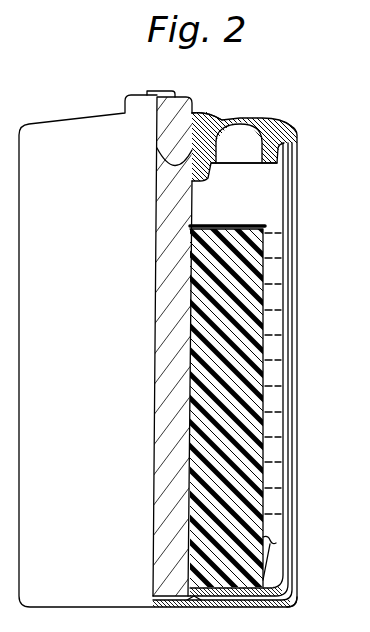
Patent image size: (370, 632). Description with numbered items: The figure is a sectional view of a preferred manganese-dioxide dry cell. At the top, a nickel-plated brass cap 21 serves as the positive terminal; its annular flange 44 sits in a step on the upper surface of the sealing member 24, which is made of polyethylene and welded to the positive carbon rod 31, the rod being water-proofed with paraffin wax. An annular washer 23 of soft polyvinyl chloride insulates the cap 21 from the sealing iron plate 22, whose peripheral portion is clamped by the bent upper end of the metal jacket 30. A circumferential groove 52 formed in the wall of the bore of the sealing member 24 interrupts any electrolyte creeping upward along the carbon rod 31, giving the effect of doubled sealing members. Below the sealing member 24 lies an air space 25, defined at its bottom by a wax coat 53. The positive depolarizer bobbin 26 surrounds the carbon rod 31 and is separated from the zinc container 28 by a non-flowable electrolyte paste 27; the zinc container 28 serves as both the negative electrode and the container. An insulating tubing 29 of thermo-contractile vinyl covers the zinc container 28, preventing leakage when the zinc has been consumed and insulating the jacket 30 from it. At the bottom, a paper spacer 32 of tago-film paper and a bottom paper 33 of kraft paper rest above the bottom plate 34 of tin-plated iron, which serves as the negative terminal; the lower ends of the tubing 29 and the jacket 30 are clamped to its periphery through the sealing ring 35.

The cap 21 is at (168, 96).
The sealing iron plate 22 is at (250, 122).
The annular washer 23 is at (223, 121).
The sealing member 24 is at (295, 132).
The air space 25 is at (270, 185).
The positive depolarizer bobbin 26 is at (253, 244).
The non-flowable electrolyte paste 27 is at (270, 282).
The zinc container 28 is at (293, 315).
The insulating tubing 29 is at (280, 347).
The metal jacket 30 is at (295, 379).
The positive carbon rod 31 is at (157, 458).
The paper spacer 32 is at (275, 540).
The bottom paper 33 is at (266, 583).
The bottom plate 34 is at (252, 607).
The sealing ring 35 is at (291, 603).
The annular flange 44 is at (207, 116).
The circumferential groove 52 is at (161, 164).
The wax coat 53 is at (287, 222).